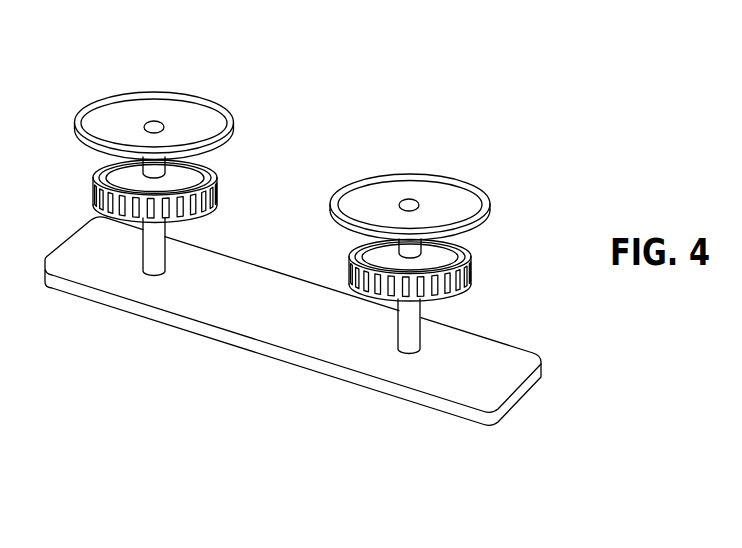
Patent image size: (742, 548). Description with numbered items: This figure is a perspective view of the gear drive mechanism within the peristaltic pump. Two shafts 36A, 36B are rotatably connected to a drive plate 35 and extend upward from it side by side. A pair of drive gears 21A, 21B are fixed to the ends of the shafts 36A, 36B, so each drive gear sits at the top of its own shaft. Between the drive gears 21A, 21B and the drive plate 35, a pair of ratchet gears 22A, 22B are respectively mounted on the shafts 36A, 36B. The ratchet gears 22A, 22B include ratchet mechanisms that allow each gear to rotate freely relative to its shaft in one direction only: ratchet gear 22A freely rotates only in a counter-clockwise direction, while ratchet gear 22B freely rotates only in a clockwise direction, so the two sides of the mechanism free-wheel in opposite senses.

The drive gear 21A is at (183, 94).
The drive gear 21B is at (489, 211).
The ratchet gear 22A is at (213, 178).
The ratchet gear 22B is at (472, 258).
The shaft 36A is at (167, 253).
The shaft 36B is at (423, 342).
The drive plate 35 is at (540, 387).